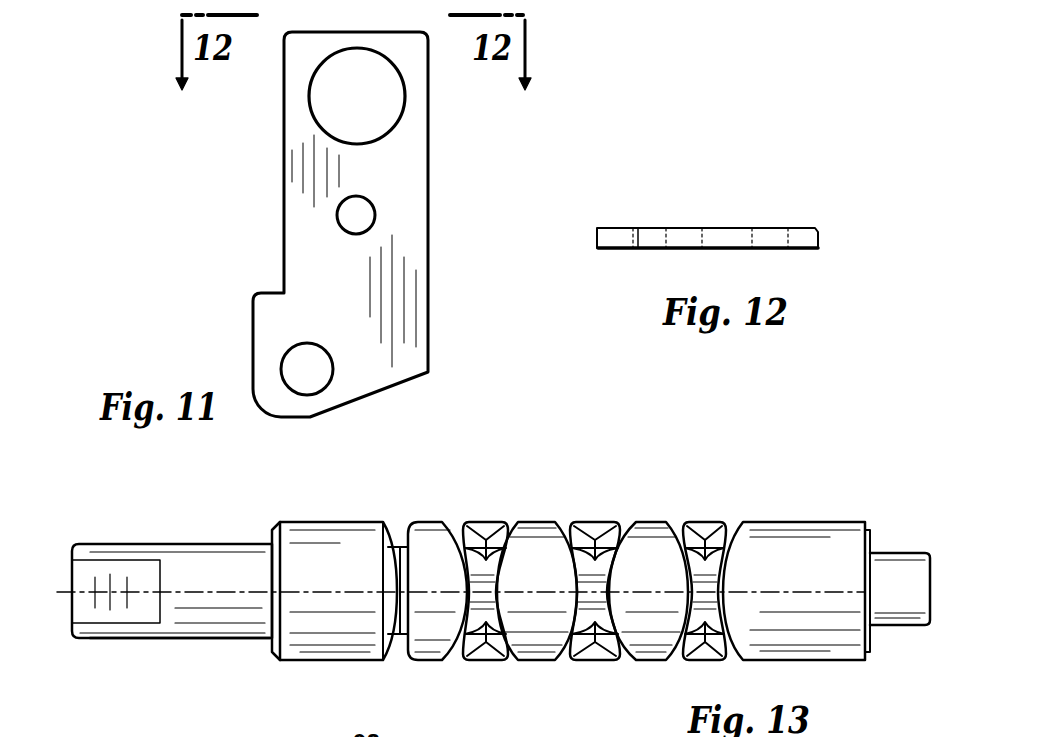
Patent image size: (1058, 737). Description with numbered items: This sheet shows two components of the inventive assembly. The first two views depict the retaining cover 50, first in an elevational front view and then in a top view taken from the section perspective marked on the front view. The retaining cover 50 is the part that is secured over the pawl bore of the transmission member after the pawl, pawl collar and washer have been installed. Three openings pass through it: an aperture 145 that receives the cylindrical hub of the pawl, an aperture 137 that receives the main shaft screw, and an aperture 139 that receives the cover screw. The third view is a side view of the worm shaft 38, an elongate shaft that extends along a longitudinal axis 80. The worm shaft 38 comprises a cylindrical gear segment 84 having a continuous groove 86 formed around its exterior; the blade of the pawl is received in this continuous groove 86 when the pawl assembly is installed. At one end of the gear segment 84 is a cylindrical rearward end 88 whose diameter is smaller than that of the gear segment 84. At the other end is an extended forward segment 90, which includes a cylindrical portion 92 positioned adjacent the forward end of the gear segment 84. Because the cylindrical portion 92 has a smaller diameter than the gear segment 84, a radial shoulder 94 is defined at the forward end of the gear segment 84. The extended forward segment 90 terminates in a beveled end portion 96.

In FIG. 11, the retaining cover 50 is at (257, 170).
In FIG. 12, the retaining cover 50 is at (793, 213).
In FIG. 11, the aperture 137 is at (370, 108).
In FIG. 11, the aperture 145 is at (363, 213).
In FIG. 11, the aperture 139 is at (307, 369).
In FIG. 13, the worm shaft 38 is at (679, 500).
In FIG. 13, the longitudinal axis 80 is at (63, 592).
In FIG. 13, the extended forward segment 90 is at (165, 543).
In FIG. 13, the cylindrical portion 92 is at (188, 640).
In FIG. 13, the radial shoulder 94 is at (258, 538).
In FIG. 13, the beveled end portion 96 is at (142, 612).
In FIG. 13, the cylindrical gear segment 84 is at (342, 522).
In FIG. 13, the continuous groove 86 is at (515, 527).
In FIG. 13, the cylindrical rearward end 88 is at (915, 570).